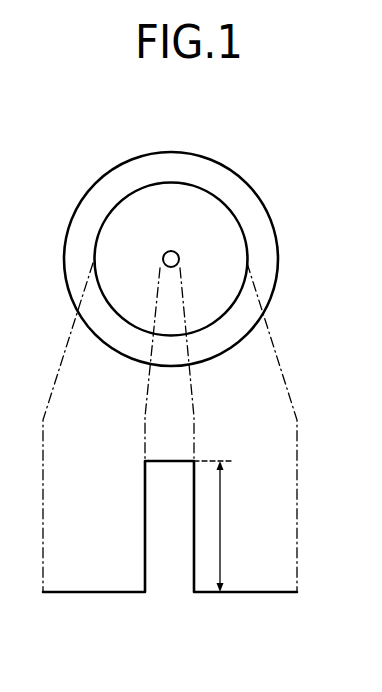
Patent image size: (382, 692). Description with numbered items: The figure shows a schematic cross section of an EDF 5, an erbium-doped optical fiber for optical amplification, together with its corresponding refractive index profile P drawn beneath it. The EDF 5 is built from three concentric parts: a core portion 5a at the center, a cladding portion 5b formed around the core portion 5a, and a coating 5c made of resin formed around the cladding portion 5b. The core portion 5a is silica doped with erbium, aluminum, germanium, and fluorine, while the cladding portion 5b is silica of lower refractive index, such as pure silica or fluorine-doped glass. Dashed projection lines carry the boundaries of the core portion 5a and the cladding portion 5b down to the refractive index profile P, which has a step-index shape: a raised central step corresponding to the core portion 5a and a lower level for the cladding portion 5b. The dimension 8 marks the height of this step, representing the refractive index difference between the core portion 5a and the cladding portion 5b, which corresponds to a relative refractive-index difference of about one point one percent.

The EDF 5 is at (193, 232).
The core portion 5a is at (179, 258).
The cladding portion 5b is at (220, 222).
The coating 5c is at (242, 200).
The step height 8 is at (222, 527).
The refractive index profile P is at (251, 605).